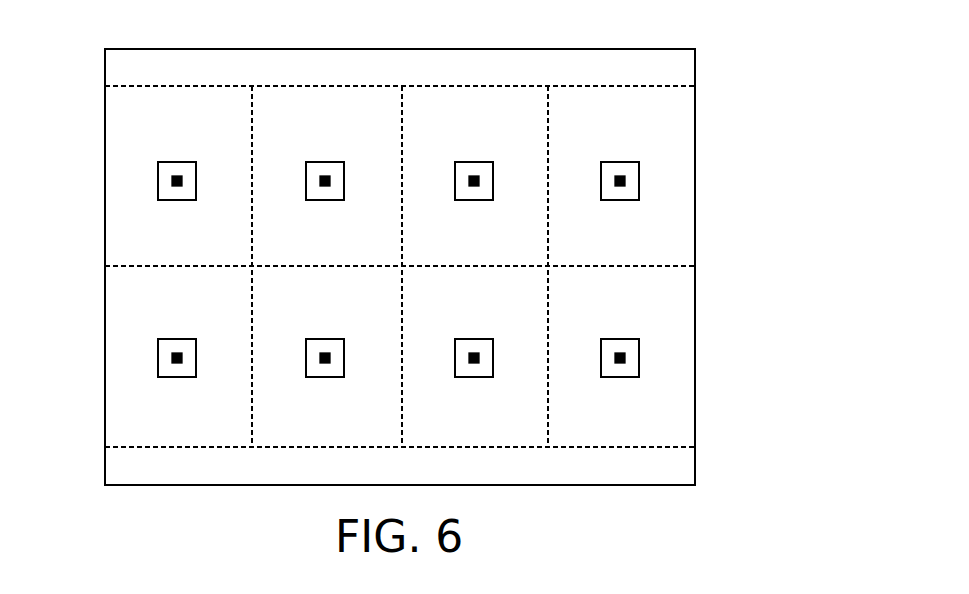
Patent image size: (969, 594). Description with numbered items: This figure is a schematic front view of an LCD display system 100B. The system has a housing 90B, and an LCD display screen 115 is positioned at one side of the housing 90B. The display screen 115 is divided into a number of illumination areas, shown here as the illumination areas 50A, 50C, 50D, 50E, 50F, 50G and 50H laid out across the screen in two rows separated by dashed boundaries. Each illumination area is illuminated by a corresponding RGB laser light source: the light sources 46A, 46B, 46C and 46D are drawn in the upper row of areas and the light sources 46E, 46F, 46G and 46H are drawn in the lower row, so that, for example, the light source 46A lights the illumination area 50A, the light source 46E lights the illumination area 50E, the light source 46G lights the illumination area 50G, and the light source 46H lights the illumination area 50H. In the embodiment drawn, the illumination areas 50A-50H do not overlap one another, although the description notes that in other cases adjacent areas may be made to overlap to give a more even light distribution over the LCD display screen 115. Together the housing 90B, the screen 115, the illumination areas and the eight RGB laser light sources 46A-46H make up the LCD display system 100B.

The RGB laser light source 46A is at (620, 162).
The RGB laser light source 46B is at (474, 162).
The RGB laser light source 46C is at (325, 162).
The RGB laser light source 46D is at (177, 162).
The RGB laser light source 46E is at (620, 339).
The RGB laser light source 46F is at (474, 339).
The RGB laser light source 46G is at (325, 339).
The RGB laser light source 46H is at (177, 339).
The illumination area 50A is at (675, 213).
The illumination area 50C is at (318, 103).
The illumination area 50D is at (123, 194).
The illumination area 50E is at (677, 385).
The illumination area 50F is at (483, 430).
The illumination area 50G is at (318, 430).
The illumination area 50H is at (123, 412).
The housing 90B is at (695, 92).
The LCD display system 100B is at (748, 148).
The LCD display screen 115 is at (123, 303).